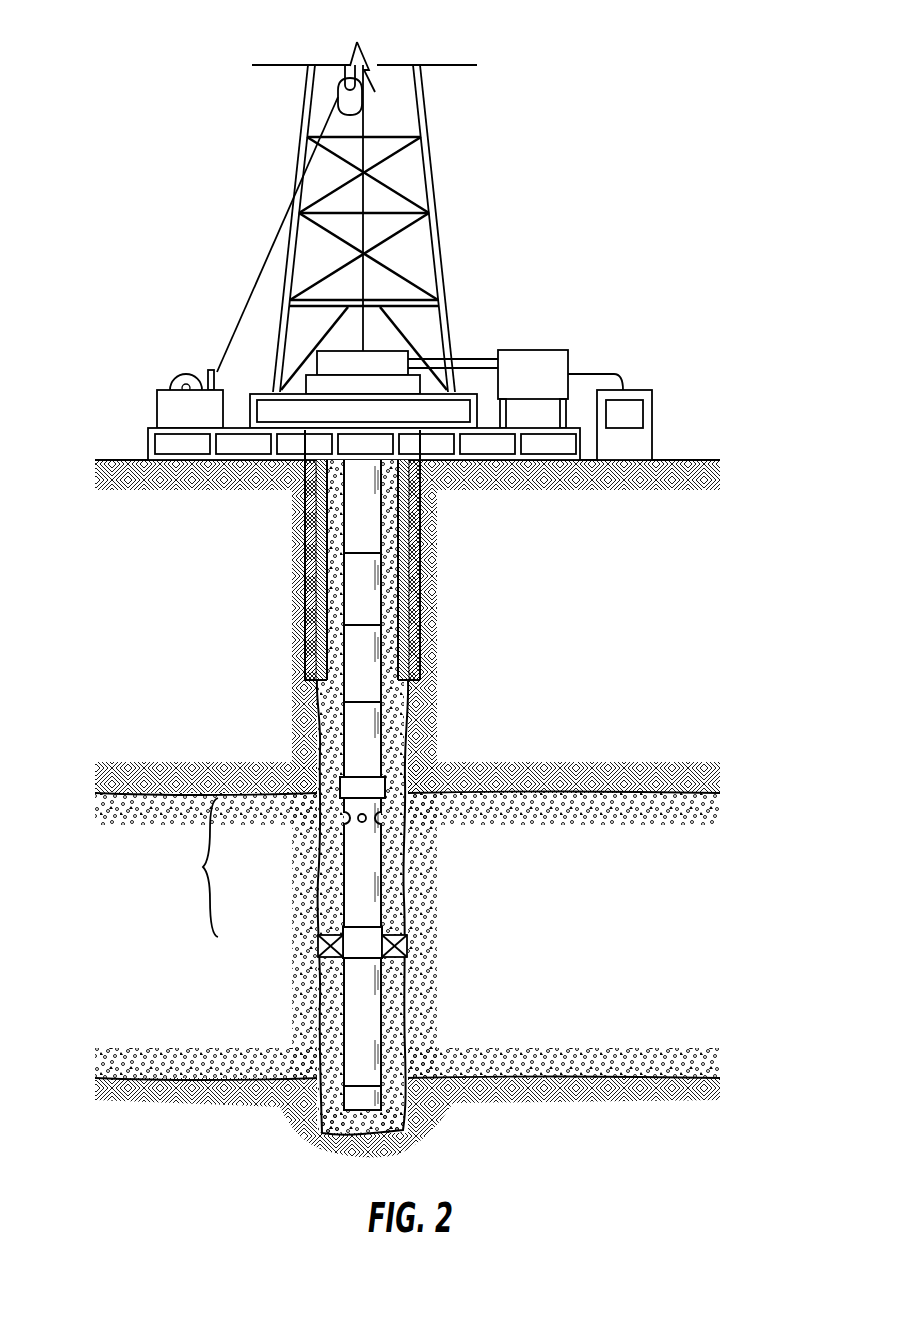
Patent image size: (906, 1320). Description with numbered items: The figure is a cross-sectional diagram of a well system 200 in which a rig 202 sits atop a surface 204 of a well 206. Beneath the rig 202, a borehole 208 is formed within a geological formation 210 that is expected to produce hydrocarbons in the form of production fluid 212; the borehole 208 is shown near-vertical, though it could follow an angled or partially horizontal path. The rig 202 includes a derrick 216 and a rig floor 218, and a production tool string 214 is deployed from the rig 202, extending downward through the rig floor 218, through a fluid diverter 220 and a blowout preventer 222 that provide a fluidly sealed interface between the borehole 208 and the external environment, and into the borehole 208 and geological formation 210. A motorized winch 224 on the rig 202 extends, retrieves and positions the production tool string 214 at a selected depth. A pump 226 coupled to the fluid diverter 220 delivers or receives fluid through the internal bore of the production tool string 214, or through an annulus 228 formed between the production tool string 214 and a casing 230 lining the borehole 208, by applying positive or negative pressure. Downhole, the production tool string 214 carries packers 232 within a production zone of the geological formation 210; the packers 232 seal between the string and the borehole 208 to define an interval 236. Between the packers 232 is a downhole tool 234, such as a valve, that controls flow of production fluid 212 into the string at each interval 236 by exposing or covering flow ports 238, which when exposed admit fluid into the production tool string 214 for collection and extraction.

The well system 200 is at (226, 44).
The rig 202 is at (480, 176).
The surface 204 is at (692, 459).
The well 206 is at (456, 620).
The borehole 208 is at (406, 723).
The geological formation 210 is at (595, 951).
The production fluid 212 is at (400, 925).
The production tool string 214 is at (344, 688).
The derrick 216 is at (303, 104).
The rig floor 218 is at (149, 444).
The fluid diverter 220 is at (393, 348).
The blowout preventer 222 is at (305, 386).
The motorized winch 224 is at (185, 378).
The pump 226 is at (533, 350).
The annulus 228 is at (333, 566).
The casing 230 is at (320, 606).
The packers 232 is at (332, 933).
The downhole tool 234 is at (382, 882).
The interval 236 is at (186, 867).
The flow ports 238 is at (332, 818).